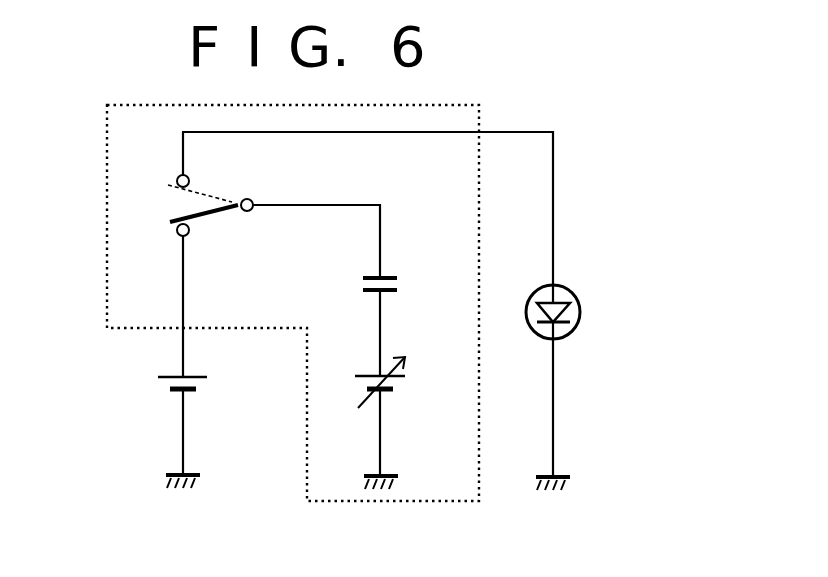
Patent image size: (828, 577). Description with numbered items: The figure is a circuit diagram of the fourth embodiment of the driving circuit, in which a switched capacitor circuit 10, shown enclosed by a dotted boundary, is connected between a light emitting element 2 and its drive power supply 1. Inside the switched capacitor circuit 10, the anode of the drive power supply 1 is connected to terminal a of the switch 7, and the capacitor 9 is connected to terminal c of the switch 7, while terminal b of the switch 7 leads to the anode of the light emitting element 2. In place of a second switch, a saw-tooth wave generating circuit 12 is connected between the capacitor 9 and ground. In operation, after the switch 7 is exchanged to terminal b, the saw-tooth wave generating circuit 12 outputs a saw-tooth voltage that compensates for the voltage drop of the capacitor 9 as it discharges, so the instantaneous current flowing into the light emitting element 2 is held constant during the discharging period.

The switched capacitor circuit 10 is at (107, 152).
The switch 7 is at (218, 187).
The capacitor 9 is at (385, 270).
The drive power supply 1 is at (158, 385).
The saw-tooth wave generating circuit 12 is at (398, 393).
The light emitting element 2 is at (578, 322).